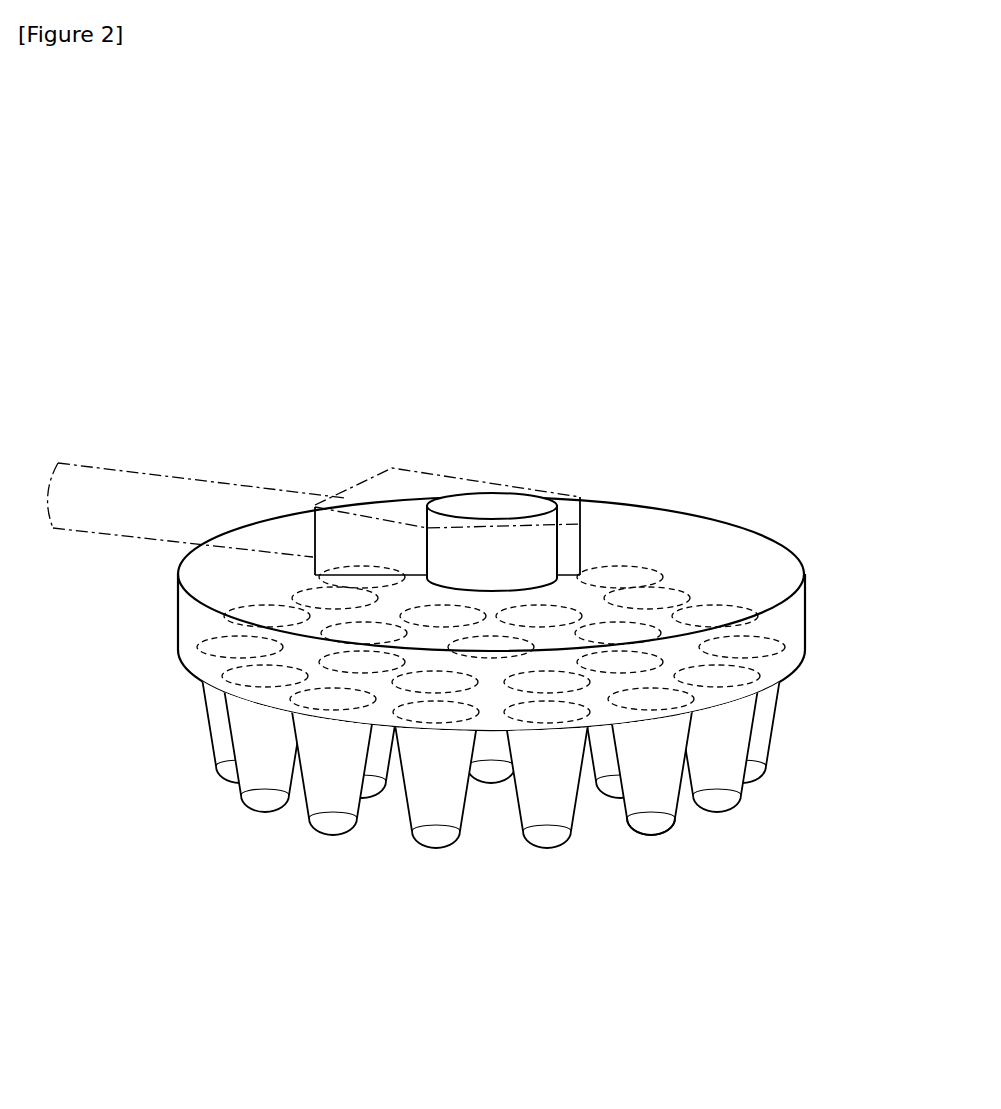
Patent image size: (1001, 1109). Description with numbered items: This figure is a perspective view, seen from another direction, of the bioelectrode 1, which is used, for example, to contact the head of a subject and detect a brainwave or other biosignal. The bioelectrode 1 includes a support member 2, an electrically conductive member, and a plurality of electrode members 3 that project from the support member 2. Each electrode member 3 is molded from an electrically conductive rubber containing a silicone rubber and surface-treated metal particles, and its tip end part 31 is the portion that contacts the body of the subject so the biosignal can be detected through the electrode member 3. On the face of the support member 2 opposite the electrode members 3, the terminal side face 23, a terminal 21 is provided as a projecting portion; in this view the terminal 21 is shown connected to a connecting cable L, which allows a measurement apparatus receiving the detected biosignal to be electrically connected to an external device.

The bioelectrode 1 is at (718, 453).
The support member 2 is at (785, 544).
The terminal 21 is at (502, 503).
The terminal side face 23 is at (651, 528).
The electrode member 3 is at (662, 793).
The tip end part 31 is at (647, 836).
The connecting cable L is at (196, 492).